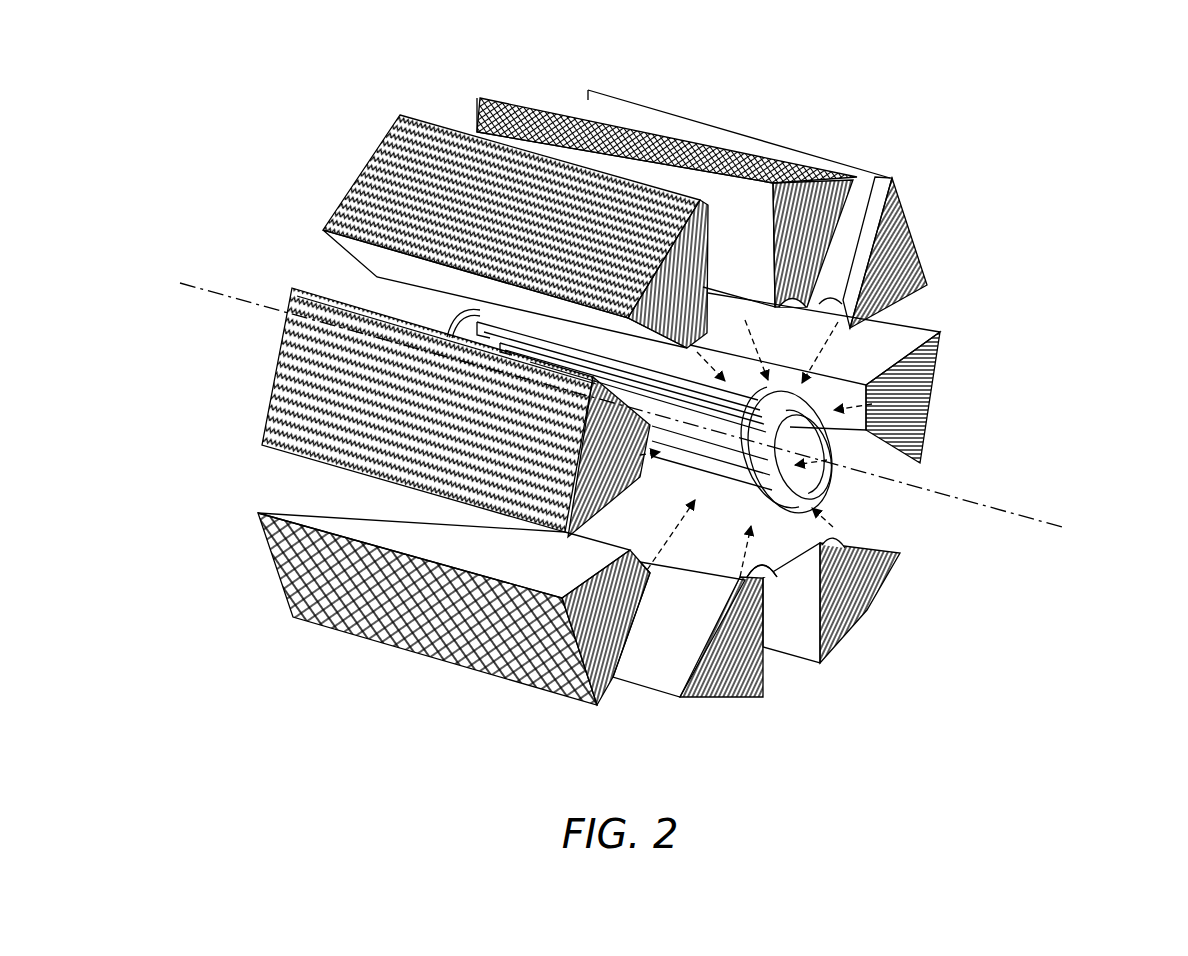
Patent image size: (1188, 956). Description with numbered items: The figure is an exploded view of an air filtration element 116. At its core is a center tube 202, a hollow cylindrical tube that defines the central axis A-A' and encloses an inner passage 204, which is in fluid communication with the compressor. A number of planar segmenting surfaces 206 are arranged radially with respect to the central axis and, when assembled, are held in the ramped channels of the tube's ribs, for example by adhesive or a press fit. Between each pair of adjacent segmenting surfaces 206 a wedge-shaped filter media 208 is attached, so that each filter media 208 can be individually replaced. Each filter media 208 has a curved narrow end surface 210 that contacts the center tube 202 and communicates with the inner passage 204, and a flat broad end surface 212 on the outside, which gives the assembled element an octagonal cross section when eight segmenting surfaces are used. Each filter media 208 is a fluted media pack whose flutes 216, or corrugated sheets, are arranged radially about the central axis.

The air filtration element 116 is at (1064, 145).
The center tube 202 is at (808, 356).
The inner passage 204 is at (817, 480).
The segmenting surfaces 206 is at (720, 237).
The filter media 208 is at (808, 160).
The narrow end surface 210 is at (750, 560).
The broad end surface 212 is at (727, 700).
The flutes 216 is at (378, 152).